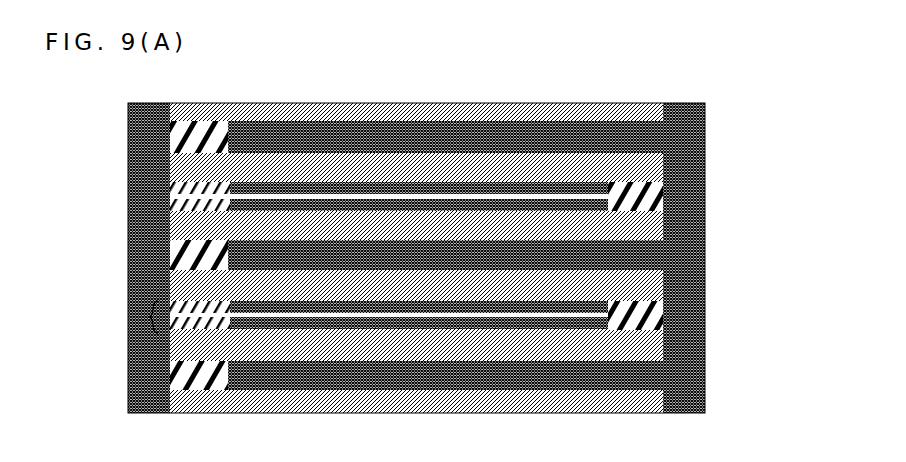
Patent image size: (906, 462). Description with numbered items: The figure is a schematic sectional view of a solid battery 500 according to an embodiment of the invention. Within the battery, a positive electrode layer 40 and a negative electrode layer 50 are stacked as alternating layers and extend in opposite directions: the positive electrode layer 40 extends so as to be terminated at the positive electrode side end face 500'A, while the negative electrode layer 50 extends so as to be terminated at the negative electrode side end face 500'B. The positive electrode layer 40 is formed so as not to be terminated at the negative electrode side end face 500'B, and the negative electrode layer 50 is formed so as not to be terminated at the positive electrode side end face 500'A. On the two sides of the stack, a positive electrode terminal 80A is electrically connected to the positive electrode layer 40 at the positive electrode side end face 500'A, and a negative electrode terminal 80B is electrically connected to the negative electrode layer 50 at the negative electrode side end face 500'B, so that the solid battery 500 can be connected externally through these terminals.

The solid battery 500 is at (410, 213).
The negative electrode layer 50 is at (655, 247).
The positive electrode layer 40 is at (140, 309).
The positive electrode terminal 80A is at (150, 260).
The negative electrode terminal 80B is at (697, 297).
The positive electrode side end face 500'A is at (220, 357).
The negative electrode side end face 500'B is at (605, 357).